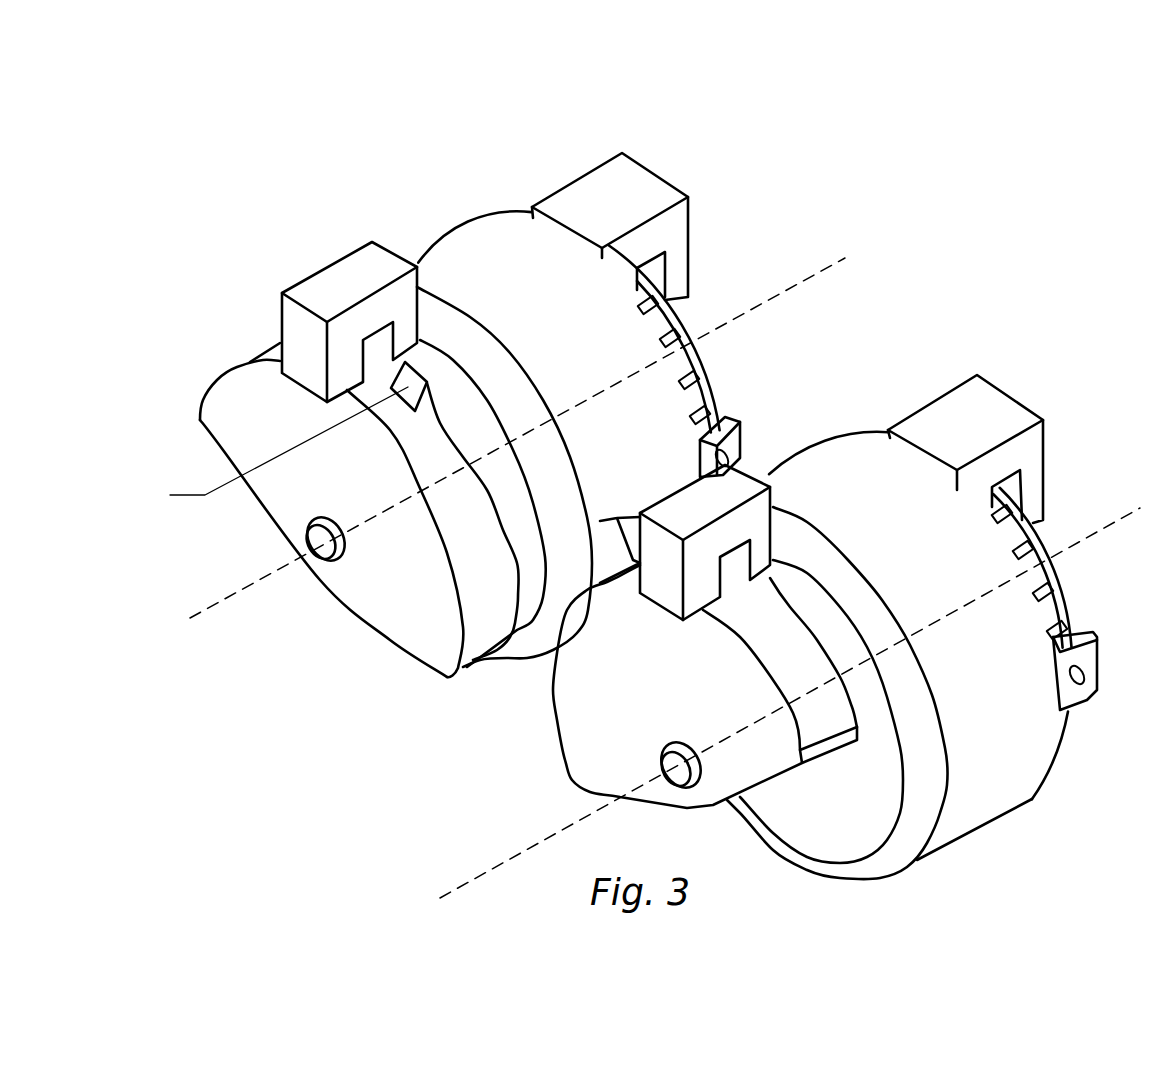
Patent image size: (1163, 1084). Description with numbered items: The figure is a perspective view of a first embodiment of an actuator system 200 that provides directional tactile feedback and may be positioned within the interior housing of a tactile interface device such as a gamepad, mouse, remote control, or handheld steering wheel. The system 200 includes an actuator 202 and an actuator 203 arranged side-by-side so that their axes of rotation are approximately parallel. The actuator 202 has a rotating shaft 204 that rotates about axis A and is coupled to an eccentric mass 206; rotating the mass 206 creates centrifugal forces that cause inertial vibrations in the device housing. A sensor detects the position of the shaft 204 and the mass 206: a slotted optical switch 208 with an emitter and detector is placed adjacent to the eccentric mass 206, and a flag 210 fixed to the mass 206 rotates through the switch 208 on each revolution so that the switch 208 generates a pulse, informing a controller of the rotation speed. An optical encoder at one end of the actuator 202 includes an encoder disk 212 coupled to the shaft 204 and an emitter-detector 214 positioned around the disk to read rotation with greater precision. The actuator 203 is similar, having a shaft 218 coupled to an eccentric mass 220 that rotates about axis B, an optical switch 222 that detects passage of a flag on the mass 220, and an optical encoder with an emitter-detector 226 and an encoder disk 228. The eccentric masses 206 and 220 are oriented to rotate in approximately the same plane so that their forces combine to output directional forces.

The actuator system 200 is at (545, 124).
The actuator 202 is at (1000, 788).
The actuator 203 is at (458, 248).
The rotating shaft 204 is at (672, 782).
The eccentric mass 206 is at (578, 727).
The slotted optical switch 208 is at (745, 518).
The flag 210 is at (627, 532).
The encoder disk 212 is at (1068, 600).
The emitter-detector 214 is at (1030, 449).
The shaft 218 is at (303, 537).
The eccentric mass 220 is at (433, 557).
The optical switch 222 is at (333, 285).
The emitter-detector 226 is at (635, 197).
The encoder disk 228 is at (707, 343).